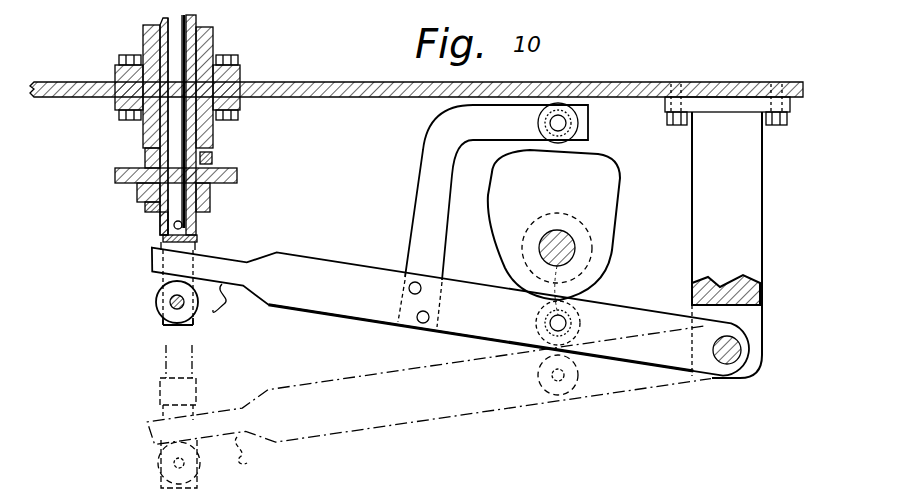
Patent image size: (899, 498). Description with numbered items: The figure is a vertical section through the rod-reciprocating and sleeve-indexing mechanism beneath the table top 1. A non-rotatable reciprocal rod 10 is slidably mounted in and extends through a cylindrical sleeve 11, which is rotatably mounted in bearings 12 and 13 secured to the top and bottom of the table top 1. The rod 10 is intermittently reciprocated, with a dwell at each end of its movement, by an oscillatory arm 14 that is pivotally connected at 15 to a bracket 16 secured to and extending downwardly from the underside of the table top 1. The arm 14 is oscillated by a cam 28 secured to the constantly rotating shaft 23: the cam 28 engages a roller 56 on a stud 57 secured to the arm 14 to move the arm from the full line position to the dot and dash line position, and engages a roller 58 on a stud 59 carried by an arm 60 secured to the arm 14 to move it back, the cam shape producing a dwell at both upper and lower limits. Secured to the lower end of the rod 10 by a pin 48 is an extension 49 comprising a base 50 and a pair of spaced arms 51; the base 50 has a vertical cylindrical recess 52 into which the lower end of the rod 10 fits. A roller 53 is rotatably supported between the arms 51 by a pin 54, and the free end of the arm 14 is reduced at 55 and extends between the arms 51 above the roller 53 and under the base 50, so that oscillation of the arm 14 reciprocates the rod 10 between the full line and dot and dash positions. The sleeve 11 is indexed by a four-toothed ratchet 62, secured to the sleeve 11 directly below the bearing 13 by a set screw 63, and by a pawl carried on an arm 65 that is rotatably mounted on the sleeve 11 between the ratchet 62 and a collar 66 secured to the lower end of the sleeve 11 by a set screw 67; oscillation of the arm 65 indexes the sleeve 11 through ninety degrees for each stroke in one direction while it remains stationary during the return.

The table top 1 is at (656, 82).
The non-rotatable reciprocal rod 10 is at (196, 17).
The cylindrical sleeve 11 is at (214, 45).
The bearing 12 is at (143, 42).
The bearing 13 is at (152, 130).
The oscillatory arm 14 is at (355, 278).
The pivotal connection 15 is at (735, 365).
The bracket 16 is at (697, 225).
The shaft 23 is at (575, 256).
The cam 28 is at (595, 195).
The pin 48 is at (196, 229).
The extension 49 is at (153, 246).
The base 50 is at (198, 239).
The spaced arms 51 is at (162, 326).
The vertical cylindrical recess 52 is at (161, 228).
The roller 53 is at (157, 298).
The pin 54 is at (172, 306).
The reduced end 55 is at (245, 380).
The roller 56 is at (582, 328).
The stud 57 is at (550, 320).
The roller 58 is at (537, 123).
The stud 59 is at (578, 124).
The arm 60 is at (421, 190).
The four-toothed ratchet 62 is at (238, 177).
The set screw 63 is at (212, 160).
The arm 65 is at (138, 190).
The collar 66 is at (212, 203).
The set screw 67 is at (146, 206).